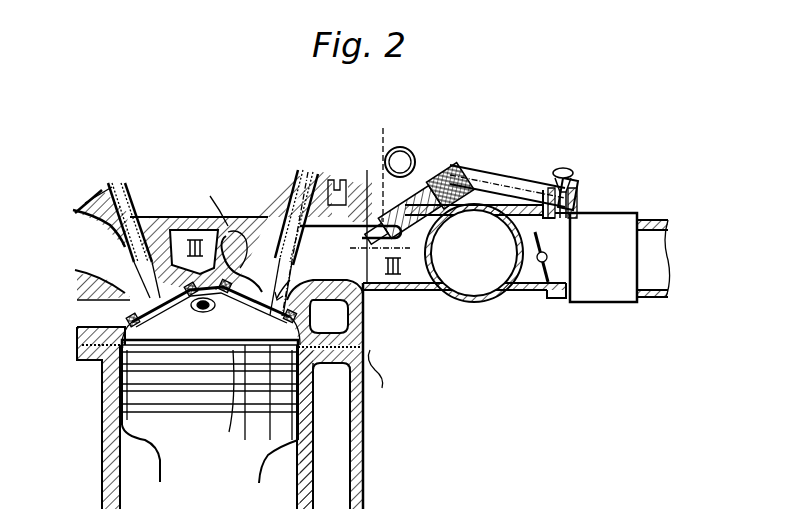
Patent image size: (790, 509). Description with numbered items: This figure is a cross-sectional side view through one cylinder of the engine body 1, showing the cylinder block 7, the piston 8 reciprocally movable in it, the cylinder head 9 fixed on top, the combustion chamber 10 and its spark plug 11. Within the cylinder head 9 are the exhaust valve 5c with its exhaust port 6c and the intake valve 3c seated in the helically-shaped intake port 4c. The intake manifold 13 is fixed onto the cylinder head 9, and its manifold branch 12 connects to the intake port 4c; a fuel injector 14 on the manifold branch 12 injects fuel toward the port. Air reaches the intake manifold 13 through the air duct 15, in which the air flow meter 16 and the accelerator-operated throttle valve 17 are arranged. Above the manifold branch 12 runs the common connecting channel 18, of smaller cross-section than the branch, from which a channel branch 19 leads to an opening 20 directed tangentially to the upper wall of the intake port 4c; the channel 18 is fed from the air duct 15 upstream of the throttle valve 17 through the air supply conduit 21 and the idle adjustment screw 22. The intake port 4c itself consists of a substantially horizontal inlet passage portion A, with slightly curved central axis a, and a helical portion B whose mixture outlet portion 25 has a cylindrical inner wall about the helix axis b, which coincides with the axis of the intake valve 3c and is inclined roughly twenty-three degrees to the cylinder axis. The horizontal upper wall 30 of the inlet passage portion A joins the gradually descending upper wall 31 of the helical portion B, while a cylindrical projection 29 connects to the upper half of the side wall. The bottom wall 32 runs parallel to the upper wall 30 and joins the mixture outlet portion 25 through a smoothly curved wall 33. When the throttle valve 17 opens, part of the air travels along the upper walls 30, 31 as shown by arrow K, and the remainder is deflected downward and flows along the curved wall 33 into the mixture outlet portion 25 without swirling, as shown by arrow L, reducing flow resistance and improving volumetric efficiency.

The engine body 1 is at (378, 355).
The intake valve 3c is at (238, 215).
The helically-shaped intake port 4c is at (318, 283).
The exhaust valve 5c is at (160, 237).
The exhaust port 6c is at (104, 253).
The cylinder block 7 is at (363, 460).
The piston 8 is at (273, 450).
The cylinder head 9 is at (255, 205).
The combustion chamber 10 is at (230, 331).
The spark plug 11 is at (196, 313).
The manifold branch 12 is at (405, 290).
The intake manifold 13 is at (497, 302).
The fuel injector 14 is at (440, 180).
The air duct 15 is at (535, 292).
The air flow meter 16 is at (607, 290).
The throttle valve 17 is at (556, 292).
The common connecting channel 18 is at (405, 148).
The channel branch 19 is at (385, 164).
The opening 20 is at (362, 172).
The air supply conduit 21 is at (512, 178).
The idle adjustment screw 22 is at (563, 167).
The mixture outlet portion 25 is at (270, 320).
The cylindrical projection 29 is at (344, 258).
The upper wall of inlet passage portion 30 is at (324, 190).
The upper wall of helical portion 31 is at (253, 212).
The bottom wall of inlet passage portion 32 is at (375, 298).
The smoothly curved wall 33 is at (331, 436).
The inlet passage portion A is at (382, 377).
The helical portion B is at (213, 202).
The arrow K is at (292, 176).
The arrow L is at (289, 278).
The longitudinal central axis a is at (413, 246).
The helix axis b is at (224, 399).